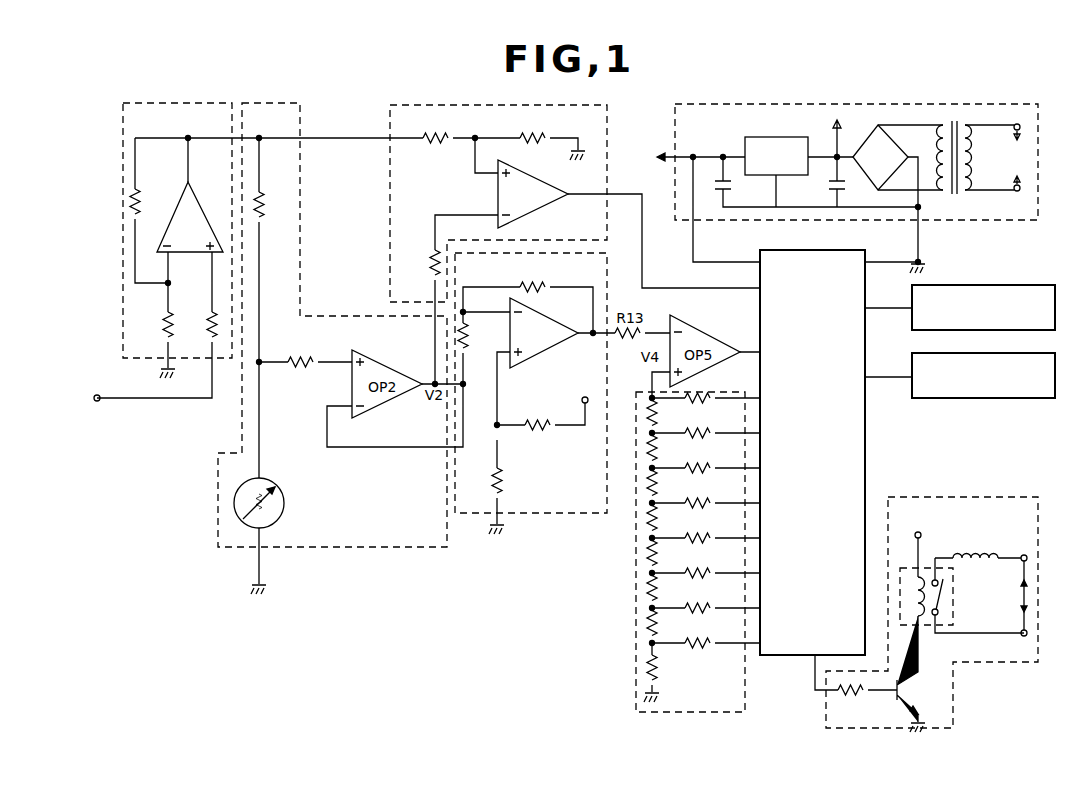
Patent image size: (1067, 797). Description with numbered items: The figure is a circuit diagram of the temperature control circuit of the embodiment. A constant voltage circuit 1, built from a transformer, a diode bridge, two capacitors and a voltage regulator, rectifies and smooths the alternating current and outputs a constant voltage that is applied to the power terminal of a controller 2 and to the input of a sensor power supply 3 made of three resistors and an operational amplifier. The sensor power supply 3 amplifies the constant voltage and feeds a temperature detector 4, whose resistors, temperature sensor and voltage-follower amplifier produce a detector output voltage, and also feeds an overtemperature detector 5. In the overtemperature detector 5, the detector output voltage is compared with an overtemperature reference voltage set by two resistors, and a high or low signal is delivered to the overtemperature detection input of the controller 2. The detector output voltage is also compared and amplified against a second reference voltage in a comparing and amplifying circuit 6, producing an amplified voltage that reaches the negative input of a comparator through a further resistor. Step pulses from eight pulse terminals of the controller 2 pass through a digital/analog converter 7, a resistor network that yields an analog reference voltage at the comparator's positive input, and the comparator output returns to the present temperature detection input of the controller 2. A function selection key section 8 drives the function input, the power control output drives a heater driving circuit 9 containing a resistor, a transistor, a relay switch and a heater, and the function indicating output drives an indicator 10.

The constant voltage circuit 1 is at (955, 220).
The controller 2 is at (865, 437).
The sensor power supply 3 is at (123, 305).
The temperature detector 4 is at (300, 170).
The overtemperature detector 5 is at (390, 228).
The comparing and amplifying circuit 6 is at (565, 514).
The digital/analog converter 7 is at (636, 623).
The function selection key section 8 is at (1022, 398).
The heater driving circuit 9 is at (955, 497).
The indicator 10 is at (1018, 285).